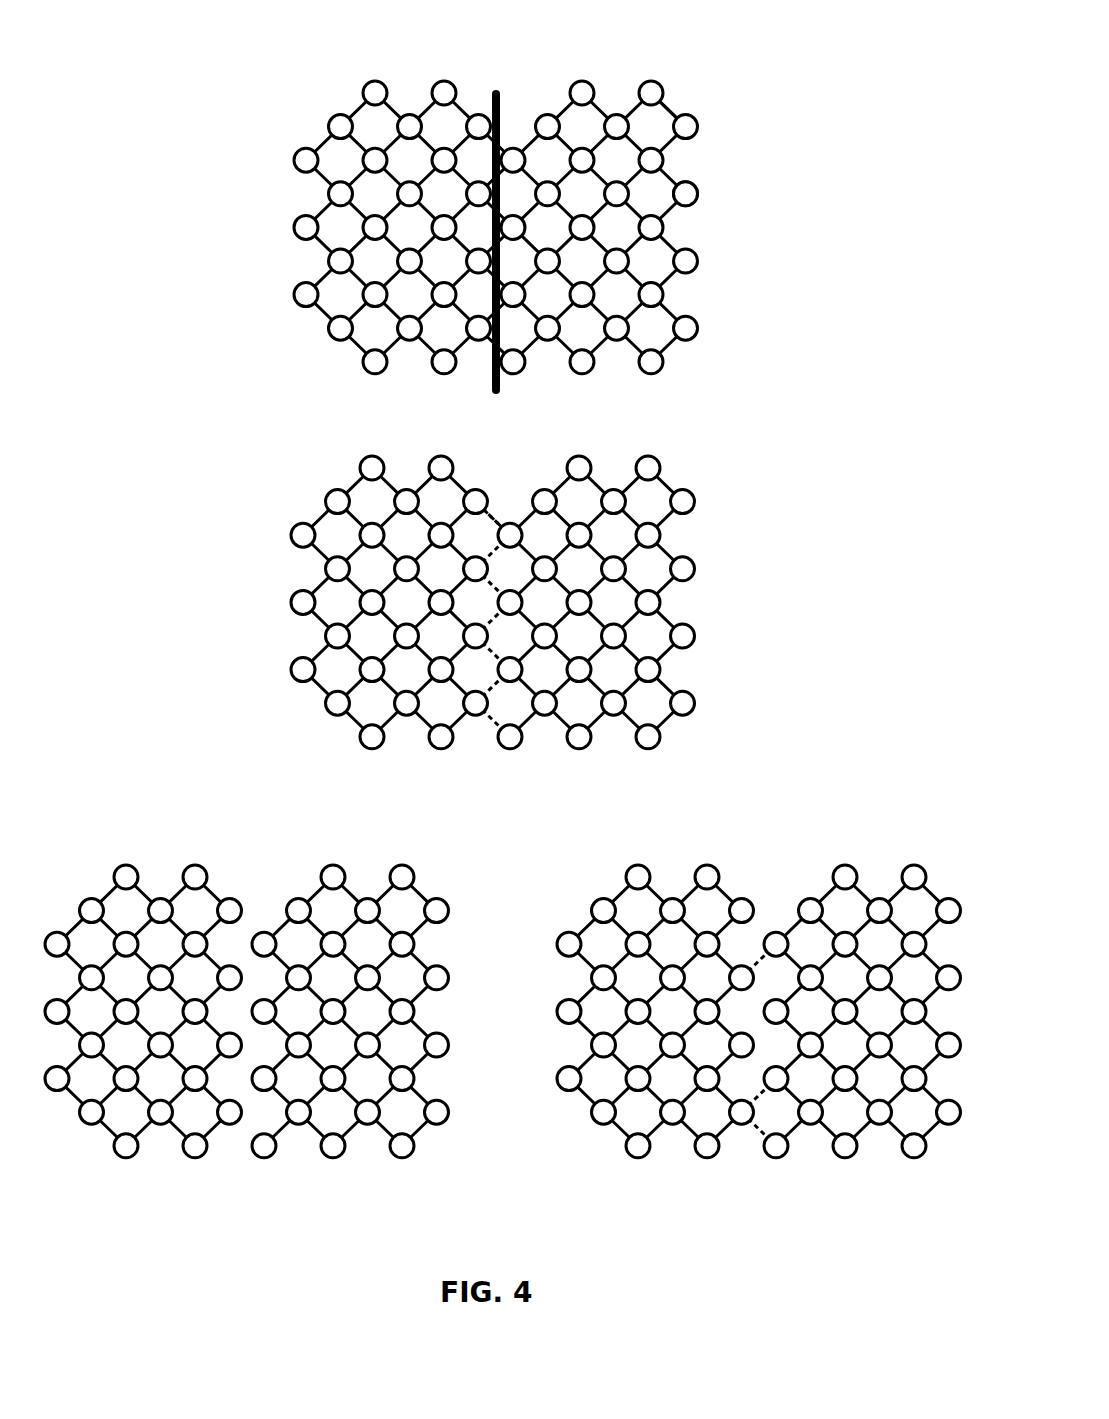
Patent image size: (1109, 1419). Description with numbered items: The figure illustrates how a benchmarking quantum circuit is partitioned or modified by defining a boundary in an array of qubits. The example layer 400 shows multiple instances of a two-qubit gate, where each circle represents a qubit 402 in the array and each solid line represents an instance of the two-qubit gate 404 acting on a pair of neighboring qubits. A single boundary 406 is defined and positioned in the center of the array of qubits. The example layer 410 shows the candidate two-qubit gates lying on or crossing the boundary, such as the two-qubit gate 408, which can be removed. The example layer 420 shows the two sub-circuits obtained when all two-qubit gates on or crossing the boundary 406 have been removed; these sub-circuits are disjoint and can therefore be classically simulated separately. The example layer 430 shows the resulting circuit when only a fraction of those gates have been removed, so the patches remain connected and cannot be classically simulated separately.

The layer 400 is at (226, 122).
The node 402 is at (702, 193).
The edge 404 is at (669, 102).
The boundary 406 is at (498, 100).
The two-qubit gate 408 is at (493, 512).
The layer 410 is at (238, 465).
The layer 420 is at (143, 852).
The layer 430 is at (650, 852).